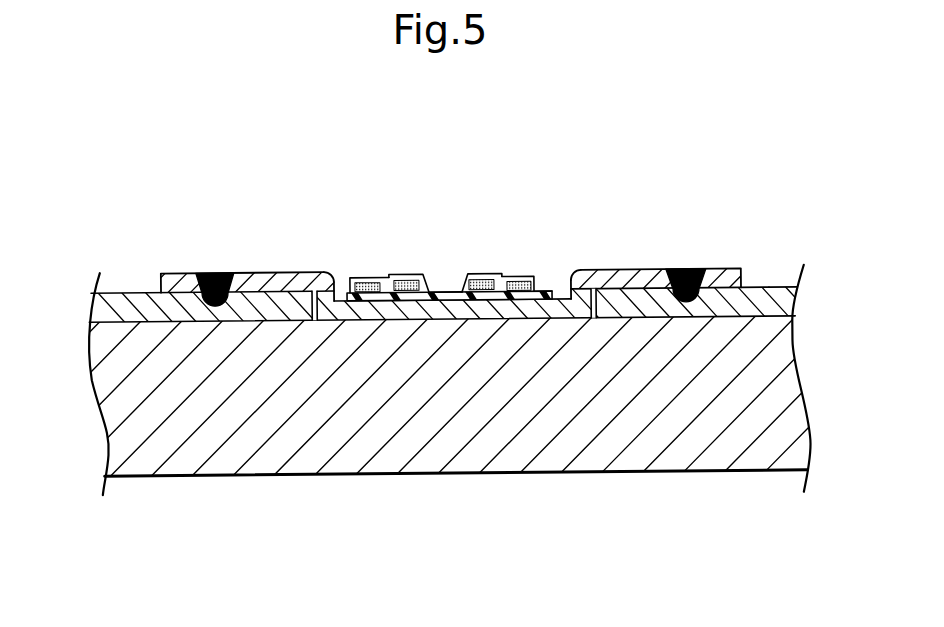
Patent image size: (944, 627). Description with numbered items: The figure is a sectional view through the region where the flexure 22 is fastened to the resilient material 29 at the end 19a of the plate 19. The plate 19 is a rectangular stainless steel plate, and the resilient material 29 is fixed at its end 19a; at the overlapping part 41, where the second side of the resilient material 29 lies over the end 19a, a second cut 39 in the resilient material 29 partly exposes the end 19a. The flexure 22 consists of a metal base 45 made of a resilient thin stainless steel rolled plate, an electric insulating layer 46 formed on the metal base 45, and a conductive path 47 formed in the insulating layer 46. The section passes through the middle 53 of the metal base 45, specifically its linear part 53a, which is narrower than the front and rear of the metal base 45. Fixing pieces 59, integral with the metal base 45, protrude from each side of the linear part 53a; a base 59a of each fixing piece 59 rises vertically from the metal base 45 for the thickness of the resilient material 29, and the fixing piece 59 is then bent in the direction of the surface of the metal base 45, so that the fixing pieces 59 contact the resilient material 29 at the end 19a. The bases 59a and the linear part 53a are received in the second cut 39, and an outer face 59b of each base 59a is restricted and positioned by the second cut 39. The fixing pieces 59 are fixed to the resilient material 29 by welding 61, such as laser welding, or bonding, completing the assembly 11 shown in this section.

The device 11 is at (703, 144).
The plate 19 is at (615, 485).
The end of the plate 19a is at (546, 293).
The flexure 22 is at (452, 274).
The resilient material 29 is at (789, 273).
The second cut 39 is at (562, 296).
The overlapping part 41 is at (765, 281).
The metal base 45 is at (403, 331).
The electric insulating layer 46 is at (525, 290).
The conductive path 47 is at (368, 276).
The middle 53 is at (345, 298).
The linear part 53a is at (401, 274).
The fixing piece 59 is at (177, 270).
The base of the fixing piece 59a is at (327, 270).
The outer face of the base 59b is at (309, 306).
The welding 61 is at (222, 271).